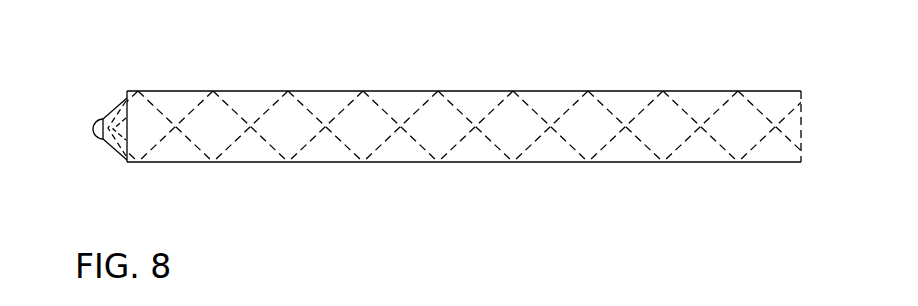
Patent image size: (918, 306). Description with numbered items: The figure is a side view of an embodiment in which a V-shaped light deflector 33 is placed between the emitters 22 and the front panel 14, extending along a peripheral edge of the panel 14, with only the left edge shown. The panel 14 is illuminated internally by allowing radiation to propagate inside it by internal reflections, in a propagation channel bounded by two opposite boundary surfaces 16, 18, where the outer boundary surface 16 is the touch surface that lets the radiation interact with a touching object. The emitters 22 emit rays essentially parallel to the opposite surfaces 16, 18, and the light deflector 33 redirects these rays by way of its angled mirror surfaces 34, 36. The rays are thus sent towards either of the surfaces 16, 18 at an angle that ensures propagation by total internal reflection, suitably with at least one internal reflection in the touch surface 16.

The front panel 14 is at (765, 87).
The outer boundary surface 16 is at (680, 90).
The boundary surface 18 is at (702, 162).
The emitter 22 is at (95, 121).
The V-shaped light deflector 33 is at (123, 130).
The angled mirror surface 34 is at (118, 118).
The angled mirror surface 36 is at (115, 142).